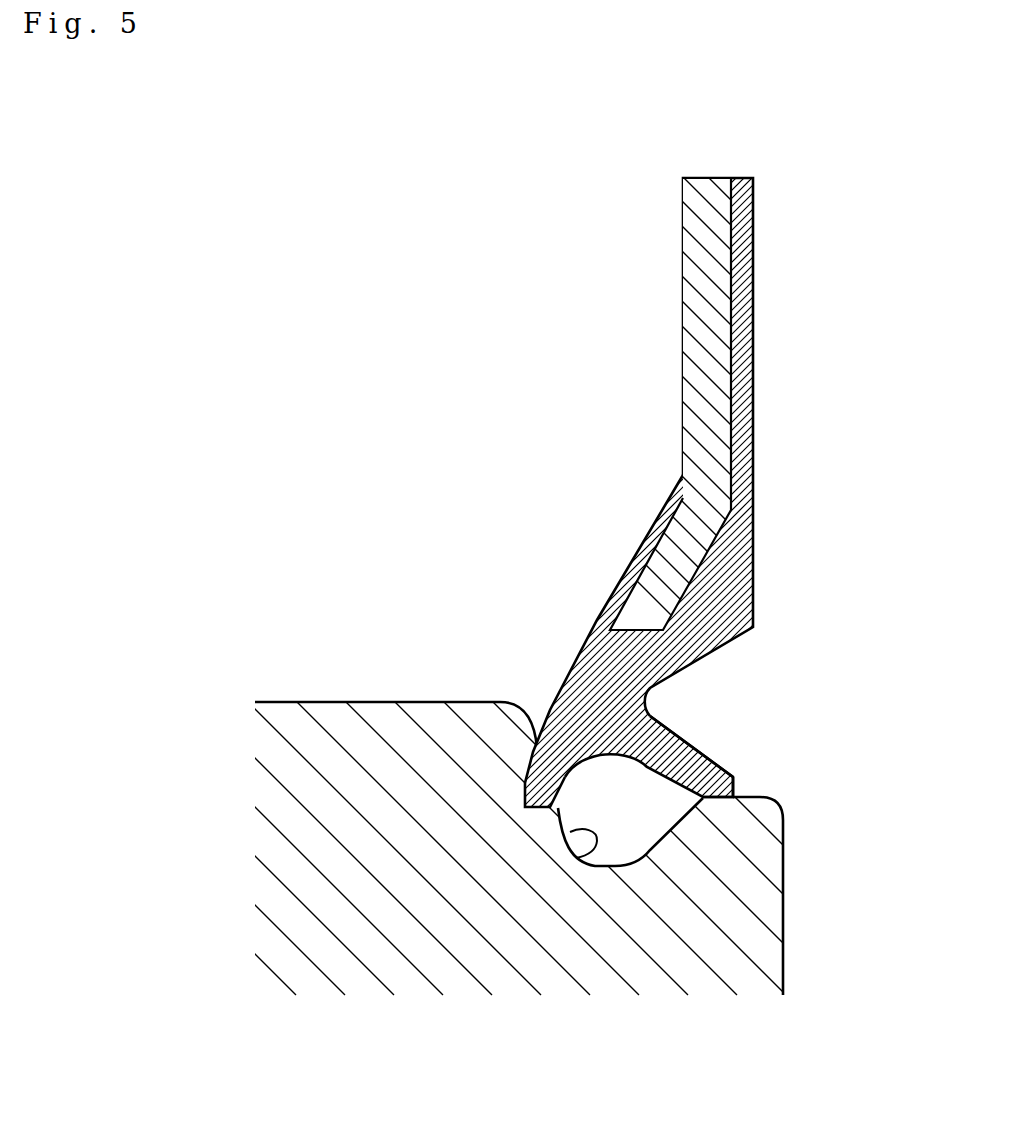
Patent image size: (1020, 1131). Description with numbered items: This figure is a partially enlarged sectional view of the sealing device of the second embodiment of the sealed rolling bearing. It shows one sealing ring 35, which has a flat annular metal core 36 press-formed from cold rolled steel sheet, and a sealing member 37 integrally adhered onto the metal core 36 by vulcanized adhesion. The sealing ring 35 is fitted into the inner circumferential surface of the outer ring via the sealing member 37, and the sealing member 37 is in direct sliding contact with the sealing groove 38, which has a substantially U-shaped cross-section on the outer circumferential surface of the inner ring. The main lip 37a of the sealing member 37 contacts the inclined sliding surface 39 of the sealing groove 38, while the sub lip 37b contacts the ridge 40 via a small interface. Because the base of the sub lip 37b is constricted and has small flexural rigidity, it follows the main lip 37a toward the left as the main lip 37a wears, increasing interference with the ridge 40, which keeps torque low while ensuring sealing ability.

The sealing ring 35 is at (772, 242).
The metal core 36 is at (707, 352).
The sealing member 37 is at (860, 675).
The main lip 37a is at (668, 725).
The sub lip 37b is at (733, 777).
The sealing groove 38 is at (618, 828).
The inclined sliding surface 39 is at (580, 860).
The ridge 40 is at (743, 793).